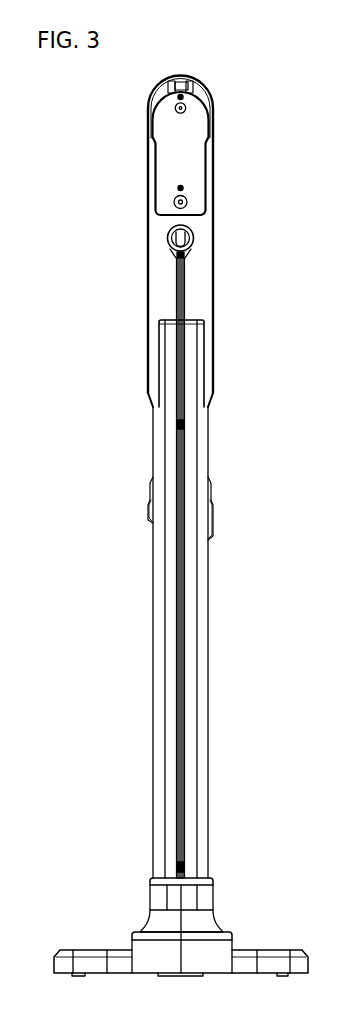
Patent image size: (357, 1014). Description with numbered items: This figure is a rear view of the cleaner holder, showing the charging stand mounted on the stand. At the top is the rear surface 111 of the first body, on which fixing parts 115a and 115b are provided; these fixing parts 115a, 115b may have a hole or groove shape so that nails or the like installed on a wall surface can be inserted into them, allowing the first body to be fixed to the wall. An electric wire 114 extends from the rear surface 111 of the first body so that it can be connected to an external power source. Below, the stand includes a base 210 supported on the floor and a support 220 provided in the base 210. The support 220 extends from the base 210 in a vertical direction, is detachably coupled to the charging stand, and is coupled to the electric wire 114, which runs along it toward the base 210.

The rear surface 111 is at (202, 167).
The fixing part 115a is at (180, 113).
The fixing part 115b is at (175, 200).
The electric wire 114 is at (182, 617).
The support 220 is at (158, 750).
The base 210 is at (90, 962).